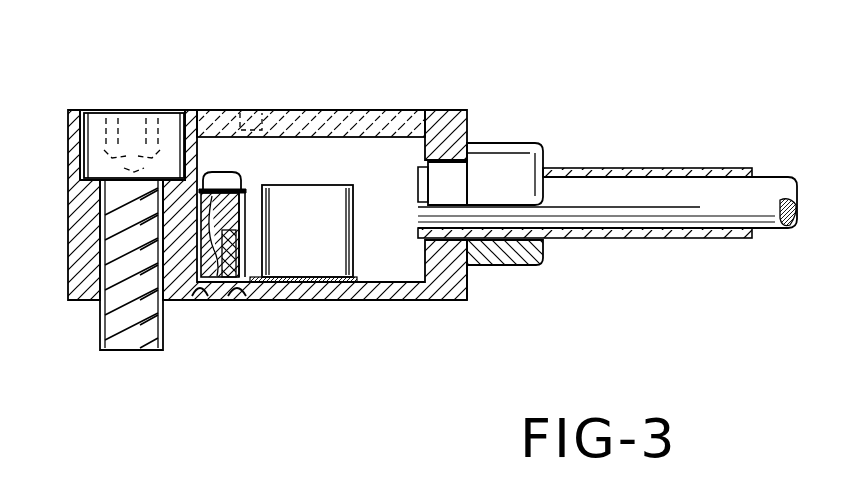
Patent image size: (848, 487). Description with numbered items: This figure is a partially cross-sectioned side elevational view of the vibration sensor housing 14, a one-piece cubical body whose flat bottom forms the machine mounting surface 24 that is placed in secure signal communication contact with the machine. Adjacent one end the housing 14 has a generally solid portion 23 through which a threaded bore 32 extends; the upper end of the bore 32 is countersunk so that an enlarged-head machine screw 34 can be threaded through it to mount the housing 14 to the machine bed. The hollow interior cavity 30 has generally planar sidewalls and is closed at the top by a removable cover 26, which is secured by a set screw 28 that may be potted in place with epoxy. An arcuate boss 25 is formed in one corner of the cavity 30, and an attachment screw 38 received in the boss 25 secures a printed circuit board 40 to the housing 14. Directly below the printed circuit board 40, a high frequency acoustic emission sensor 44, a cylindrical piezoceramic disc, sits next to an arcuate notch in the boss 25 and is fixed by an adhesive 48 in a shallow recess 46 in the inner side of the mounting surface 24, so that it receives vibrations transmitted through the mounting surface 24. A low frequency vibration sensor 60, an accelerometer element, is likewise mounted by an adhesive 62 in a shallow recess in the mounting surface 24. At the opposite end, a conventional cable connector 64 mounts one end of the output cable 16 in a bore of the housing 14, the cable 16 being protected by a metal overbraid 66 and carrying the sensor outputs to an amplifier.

The vibration sensor housing 14 is at (66, 200).
The output cable 16 is at (672, 222).
The solid portion 23 is at (82, 252).
The machine mounting surface 24 is at (466, 300).
The arcuate boss 25 is at (240, 175).
The removable cover 26 is at (314, 120).
The set screw 28 is at (243, 118).
The hollow interior cavity 30 is at (407, 275).
The threaded bore 32 is at (106, 260).
The machine screw 34 is at (97, 128).
The attachment screw 38 is at (213, 168).
The printed circuit board 40 is at (247, 208).
The acoustic emission sensor 44 is at (240, 283).
The shallow recess 46 is at (193, 296).
The adhesive 48 is at (228, 296).
The low frequency responsive vibration sensor 60 is at (322, 242).
The adhesive 62 is at (338, 287).
The cable connector 64 is at (487, 147).
The metal overbraid 66 is at (657, 125).